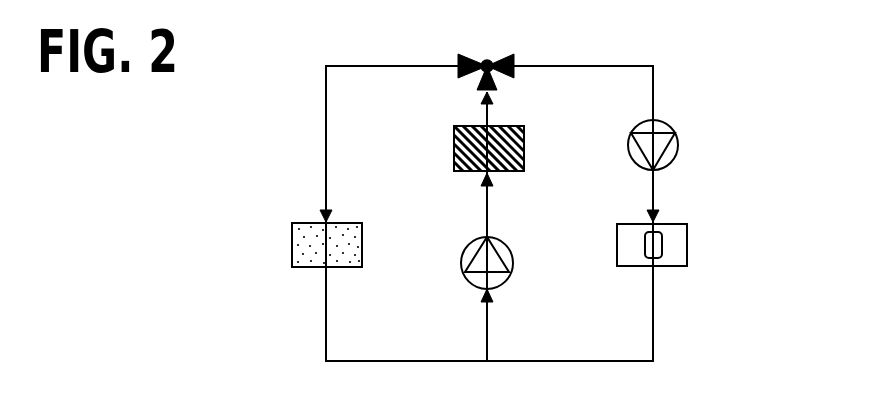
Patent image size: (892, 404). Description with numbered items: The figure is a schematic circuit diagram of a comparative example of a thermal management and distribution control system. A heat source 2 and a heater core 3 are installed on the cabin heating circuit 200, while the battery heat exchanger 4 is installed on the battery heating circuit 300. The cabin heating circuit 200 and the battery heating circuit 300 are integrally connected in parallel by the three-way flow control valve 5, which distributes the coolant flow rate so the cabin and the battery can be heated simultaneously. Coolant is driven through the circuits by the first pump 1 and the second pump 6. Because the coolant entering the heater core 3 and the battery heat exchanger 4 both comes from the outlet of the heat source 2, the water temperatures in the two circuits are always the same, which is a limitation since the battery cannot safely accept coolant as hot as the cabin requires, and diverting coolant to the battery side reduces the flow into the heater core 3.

The first pump 1 is at (511, 246).
The heat source 2 is at (454, 138).
The heater core 3 is at (292, 243).
The battery heat exchanger 4 is at (688, 243).
The three-way flow control valve 5 is at (490, 58).
The second pump 6 is at (678, 128).
The cabin heating circuit 200 is at (326, 118).
The battery heating circuit 300 is at (653, 327).